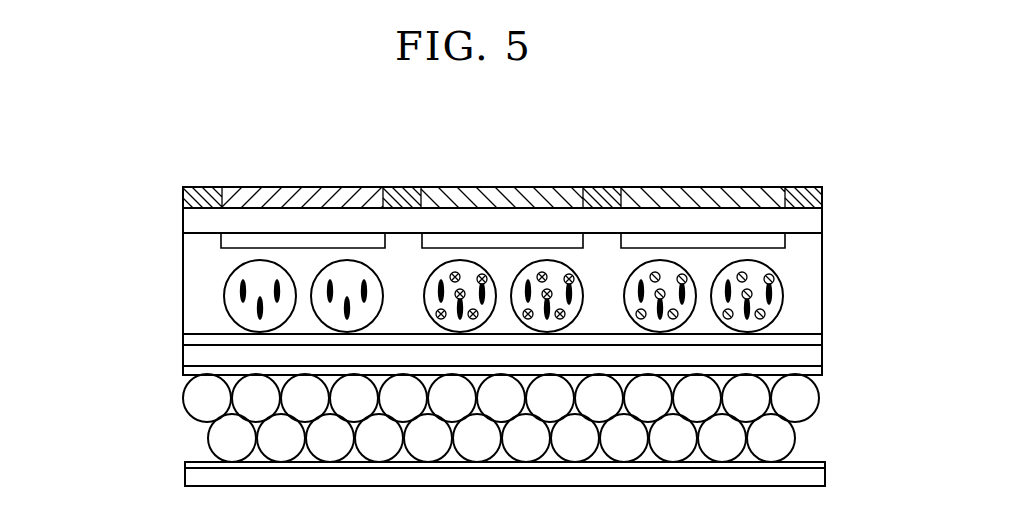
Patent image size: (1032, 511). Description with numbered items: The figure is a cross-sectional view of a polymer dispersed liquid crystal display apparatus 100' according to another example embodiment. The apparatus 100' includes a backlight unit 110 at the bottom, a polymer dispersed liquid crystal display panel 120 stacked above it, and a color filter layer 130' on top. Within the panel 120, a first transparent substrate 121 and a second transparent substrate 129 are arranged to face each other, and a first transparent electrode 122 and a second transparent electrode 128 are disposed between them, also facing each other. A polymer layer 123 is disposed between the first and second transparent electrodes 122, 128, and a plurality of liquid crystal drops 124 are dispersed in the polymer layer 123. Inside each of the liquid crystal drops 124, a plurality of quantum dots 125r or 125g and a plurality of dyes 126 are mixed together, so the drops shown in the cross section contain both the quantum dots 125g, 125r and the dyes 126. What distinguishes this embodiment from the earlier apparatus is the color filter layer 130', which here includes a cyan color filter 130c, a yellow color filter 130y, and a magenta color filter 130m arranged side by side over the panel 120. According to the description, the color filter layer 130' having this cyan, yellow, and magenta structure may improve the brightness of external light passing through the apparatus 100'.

The polymer dispersed liquid crystal display apparatus 100' is at (489, 302).
The backlight unit 110 is at (833, 365).
The polymer dispersed liquid crystal display panel 120 is at (163, 288).
The first transparent substrate 121 is at (818, 358).
The first transparent electrode 122 is at (818, 337).
The polymer layer 123 is at (818, 313).
The liquid crystal drops 124 is at (777, 302).
The quantum dots 125g is at (455, 272).
The quantum dots 125r is at (655, 272).
The dyes 126 is at (782, 287).
The second transparent electrode 128 is at (787, 245).
The second transparent substrate 129 is at (818, 215).
The color filter layer 130' is at (167, 198).
The cyan color filter 130c is at (299, 193).
The yellow color filter 130y is at (508, 193).
The magenta color filter 130m is at (709, 193).